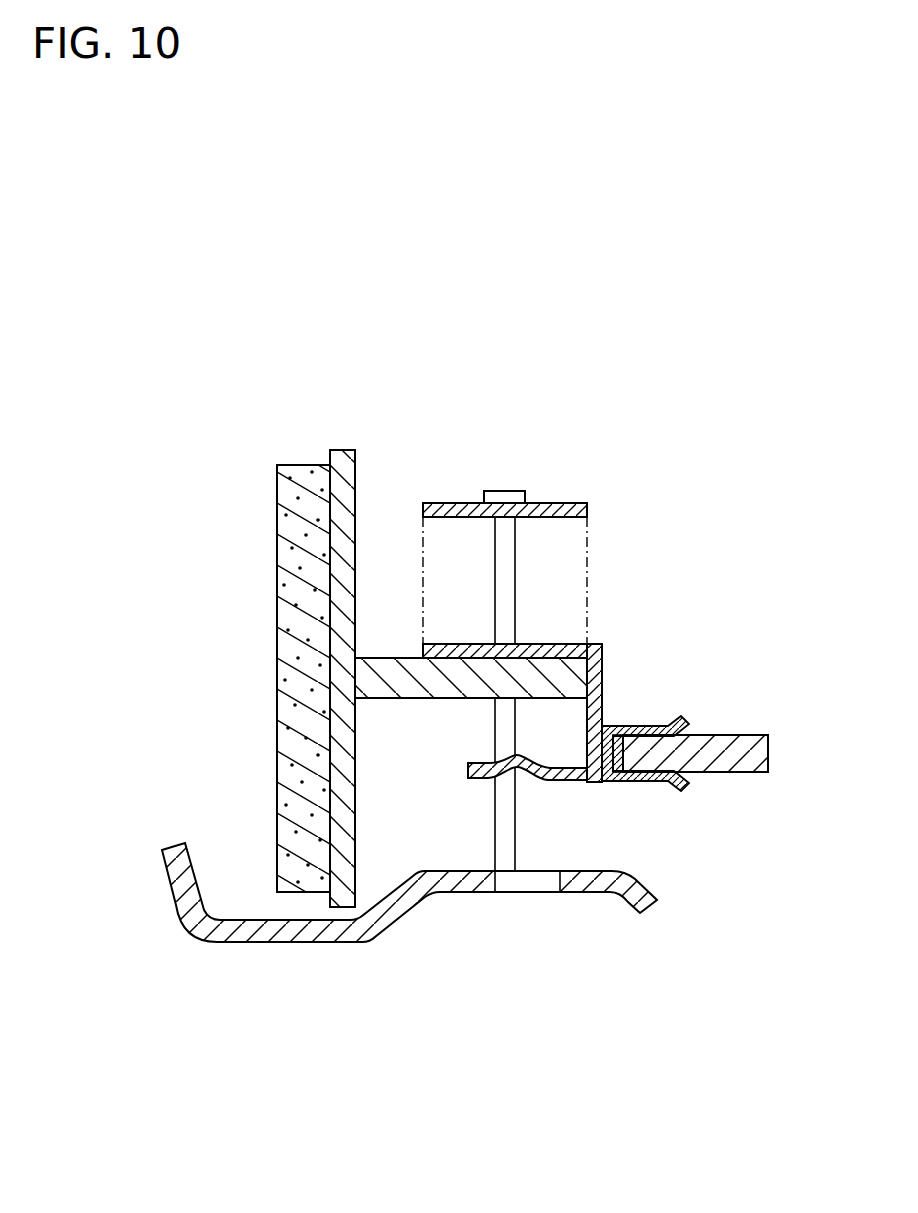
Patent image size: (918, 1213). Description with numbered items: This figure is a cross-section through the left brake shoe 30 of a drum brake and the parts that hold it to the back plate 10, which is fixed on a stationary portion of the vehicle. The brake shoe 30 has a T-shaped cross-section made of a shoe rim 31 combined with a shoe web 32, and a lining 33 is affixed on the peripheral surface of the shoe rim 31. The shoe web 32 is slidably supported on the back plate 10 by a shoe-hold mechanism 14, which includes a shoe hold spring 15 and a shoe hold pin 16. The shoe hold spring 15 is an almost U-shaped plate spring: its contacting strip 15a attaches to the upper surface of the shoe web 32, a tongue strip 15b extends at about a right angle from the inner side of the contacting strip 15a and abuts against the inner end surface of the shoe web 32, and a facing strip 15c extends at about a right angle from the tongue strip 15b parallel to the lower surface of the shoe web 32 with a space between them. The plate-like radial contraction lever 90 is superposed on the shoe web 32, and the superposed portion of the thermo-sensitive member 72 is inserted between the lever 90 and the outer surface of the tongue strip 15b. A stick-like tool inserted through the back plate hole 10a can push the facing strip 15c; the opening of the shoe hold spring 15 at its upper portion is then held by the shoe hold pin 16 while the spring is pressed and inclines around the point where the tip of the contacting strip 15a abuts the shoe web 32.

The back plate 10 is at (409, 951).
The back plate hole 10a is at (528, 883).
The shoe-hold mechanism 14 is at (575, 498).
The shoe hold spring 15 is at (467, 503).
The contacting strip 15a is at (550, 637).
The tongue strip 15b is at (603, 663).
The facing strip 15c is at (543, 777).
The shoe hold pin 16 is at (517, 568).
The brake shoe 30 is at (270, 644).
The shoe rim 31 is at (347, 450).
The shoe web 32 is at (408, 670).
The lining 33 is at (276, 508).
The thermo-sensitive member 72 is at (635, 720).
The radial contraction lever 90 is at (768, 752).